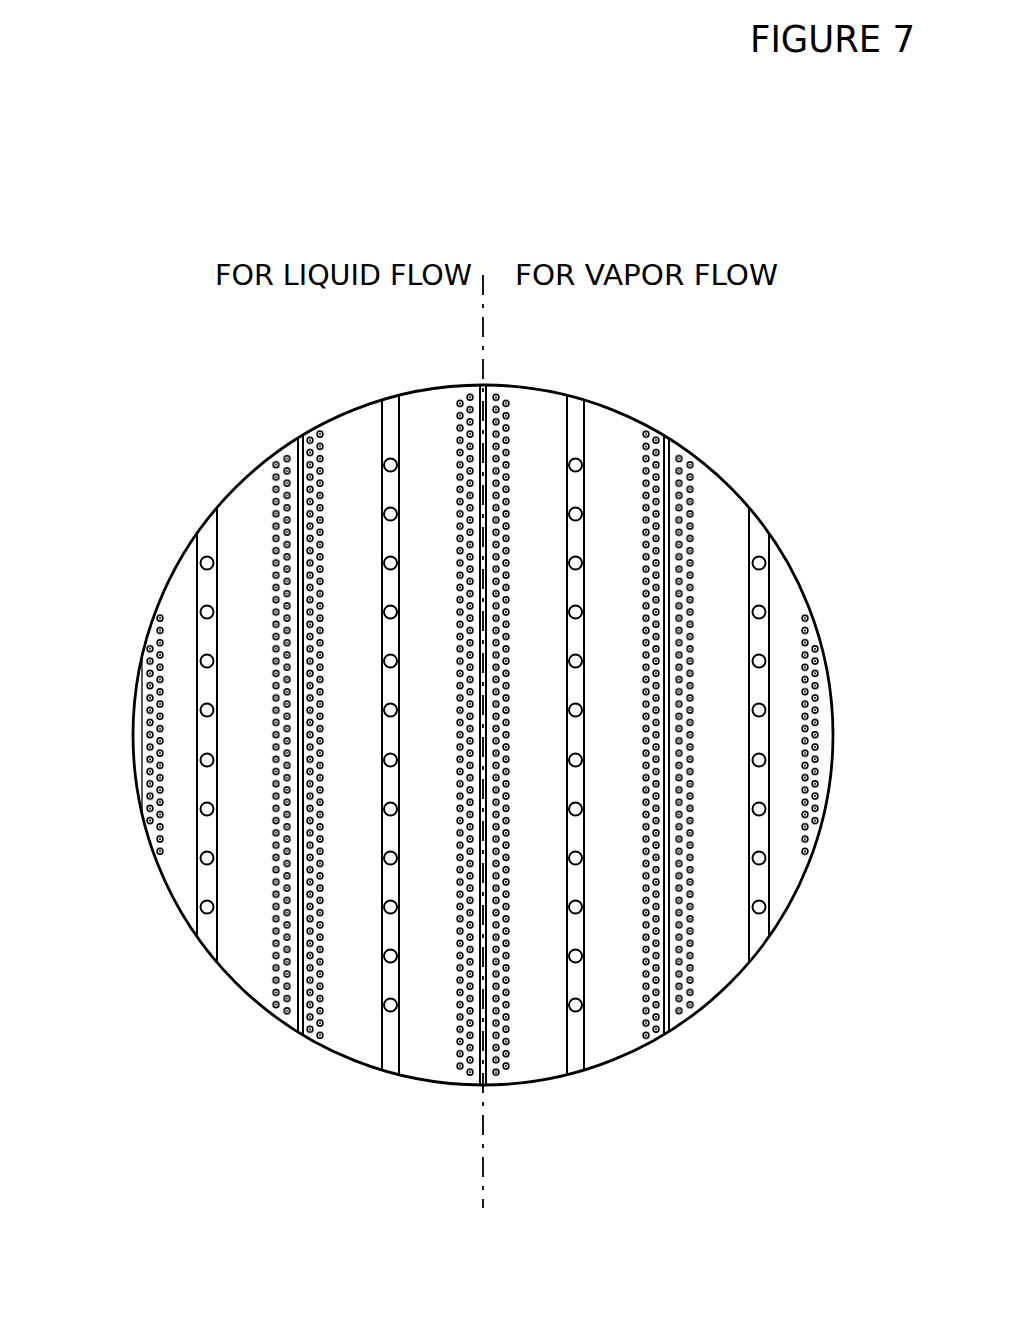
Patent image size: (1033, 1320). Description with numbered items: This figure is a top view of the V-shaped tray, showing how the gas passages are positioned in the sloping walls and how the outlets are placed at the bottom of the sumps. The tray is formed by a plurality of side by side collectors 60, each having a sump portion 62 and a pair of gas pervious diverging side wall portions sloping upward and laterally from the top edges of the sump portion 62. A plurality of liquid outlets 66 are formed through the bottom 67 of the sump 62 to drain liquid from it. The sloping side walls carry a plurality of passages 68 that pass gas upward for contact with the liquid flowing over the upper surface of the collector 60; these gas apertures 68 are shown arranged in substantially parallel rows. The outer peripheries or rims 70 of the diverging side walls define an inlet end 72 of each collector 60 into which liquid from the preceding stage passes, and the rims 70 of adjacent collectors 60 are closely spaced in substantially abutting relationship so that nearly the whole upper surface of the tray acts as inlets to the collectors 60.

The collector 60 is at (258, 497).
The sump portion 62 is at (233, 985).
The liquid outlets 66 is at (388, 453).
The bottom of the sump 67 is at (207, 517).
The passages 68 is at (640, 458).
The outer peripheries or rims 70 is at (297, 437).
The inlet end 72 is at (823, 818).